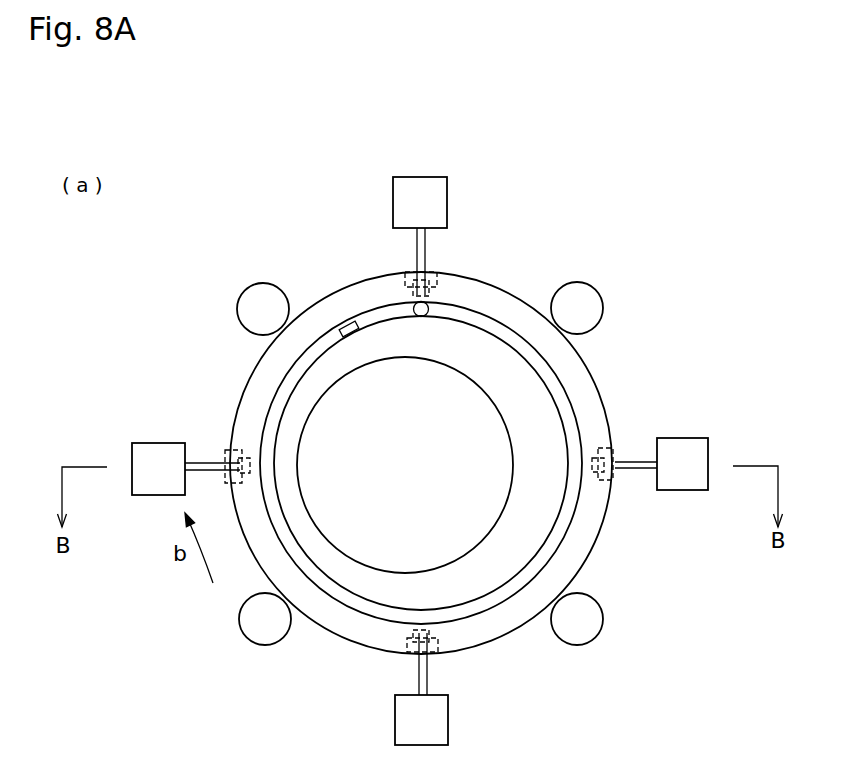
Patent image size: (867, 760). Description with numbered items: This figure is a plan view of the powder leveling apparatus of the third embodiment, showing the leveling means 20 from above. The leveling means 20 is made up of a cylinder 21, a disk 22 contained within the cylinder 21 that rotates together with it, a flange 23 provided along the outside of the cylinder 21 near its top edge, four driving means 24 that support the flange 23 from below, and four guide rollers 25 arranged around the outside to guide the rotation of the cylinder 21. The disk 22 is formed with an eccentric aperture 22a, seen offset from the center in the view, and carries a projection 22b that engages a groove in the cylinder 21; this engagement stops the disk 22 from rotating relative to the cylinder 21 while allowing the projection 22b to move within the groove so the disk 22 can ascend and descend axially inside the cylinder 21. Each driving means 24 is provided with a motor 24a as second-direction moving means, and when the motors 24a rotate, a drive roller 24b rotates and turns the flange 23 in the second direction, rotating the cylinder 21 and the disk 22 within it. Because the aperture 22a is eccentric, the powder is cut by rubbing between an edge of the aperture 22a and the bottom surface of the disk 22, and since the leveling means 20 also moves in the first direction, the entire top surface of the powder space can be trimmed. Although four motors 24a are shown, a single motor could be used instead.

The leveling means 20 is at (178, 354).
The cylinder 21 is at (478, 318).
The disk 22 is at (540, 500).
The eccentric aperture 22a is at (382, 480).
The projection 22b is at (348, 318).
The flange 23 is at (332, 292).
The driving means 24 is at (458, 243).
The motor 24a is at (420, 177).
The drive roller 24b is at (410, 270).
The guide roller 25 is at (240, 295).